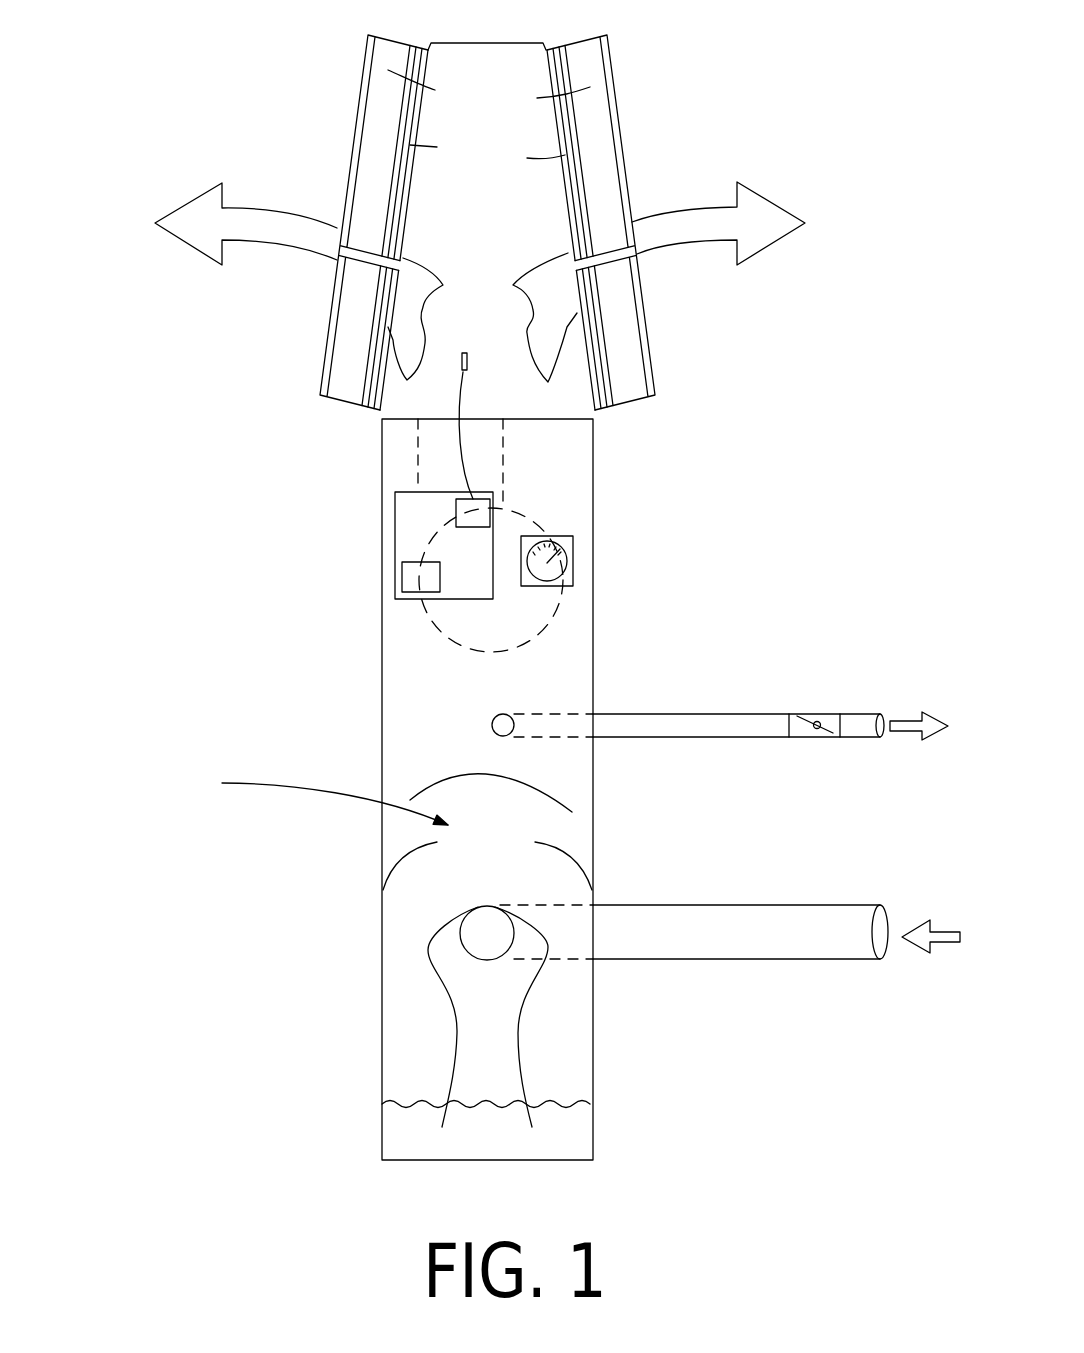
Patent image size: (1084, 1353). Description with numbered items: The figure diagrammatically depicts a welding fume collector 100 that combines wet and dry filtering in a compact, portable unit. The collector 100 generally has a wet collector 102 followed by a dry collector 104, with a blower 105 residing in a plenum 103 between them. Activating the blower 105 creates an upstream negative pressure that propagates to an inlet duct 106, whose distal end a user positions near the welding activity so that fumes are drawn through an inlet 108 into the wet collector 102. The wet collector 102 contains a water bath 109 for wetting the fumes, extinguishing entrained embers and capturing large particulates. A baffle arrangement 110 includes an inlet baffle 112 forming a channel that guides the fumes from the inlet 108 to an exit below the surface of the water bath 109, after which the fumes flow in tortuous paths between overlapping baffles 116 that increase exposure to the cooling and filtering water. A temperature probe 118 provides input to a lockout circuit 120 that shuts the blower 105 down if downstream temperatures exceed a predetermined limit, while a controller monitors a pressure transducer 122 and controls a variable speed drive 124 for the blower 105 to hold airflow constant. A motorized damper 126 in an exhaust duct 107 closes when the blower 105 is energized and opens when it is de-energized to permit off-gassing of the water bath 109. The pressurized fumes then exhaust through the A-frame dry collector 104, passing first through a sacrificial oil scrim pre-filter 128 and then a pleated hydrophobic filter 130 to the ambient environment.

The welding fume collector 100 is at (207, 80).
The wet collector 102 is at (273, 685).
The plenum 103 is at (245, 460).
The dry collector 104 is at (800, 175).
The blower 105 is at (550, 618).
The inlet duct 106 is at (778, 903).
The exhaust duct 107 is at (718, 712).
The inlet 108 is at (485, 903).
The water bath 109 is at (553, 1100).
The baffle arrangement 110 is at (305, 794).
The inlet baffle 112 is at (457, 1033).
The overlapping baffles 116 is at (447, 780).
The temperature probe 118 is at (463, 368).
The lockout circuit 120 is at (456, 513).
The pressure transducer 122 is at (565, 543).
The variable speed drive 124 is at (402, 577).
The motorized damper 126 is at (827, 712).
The sacrificial oil scrim pre-filter 128 is at (397, 220).
The pleated hydrophobic filter 130 is at (375, 115).